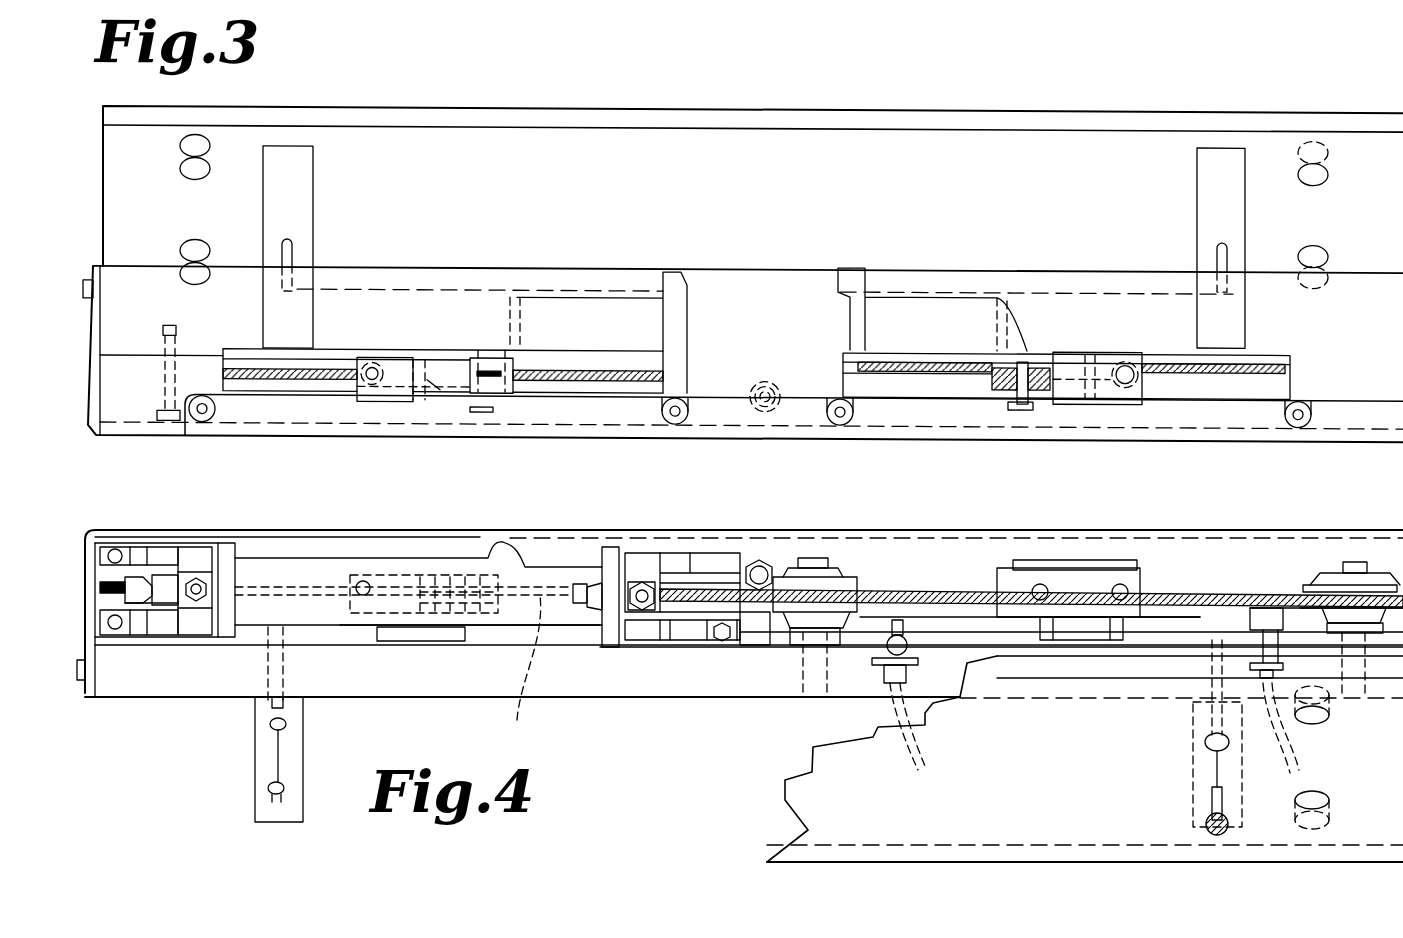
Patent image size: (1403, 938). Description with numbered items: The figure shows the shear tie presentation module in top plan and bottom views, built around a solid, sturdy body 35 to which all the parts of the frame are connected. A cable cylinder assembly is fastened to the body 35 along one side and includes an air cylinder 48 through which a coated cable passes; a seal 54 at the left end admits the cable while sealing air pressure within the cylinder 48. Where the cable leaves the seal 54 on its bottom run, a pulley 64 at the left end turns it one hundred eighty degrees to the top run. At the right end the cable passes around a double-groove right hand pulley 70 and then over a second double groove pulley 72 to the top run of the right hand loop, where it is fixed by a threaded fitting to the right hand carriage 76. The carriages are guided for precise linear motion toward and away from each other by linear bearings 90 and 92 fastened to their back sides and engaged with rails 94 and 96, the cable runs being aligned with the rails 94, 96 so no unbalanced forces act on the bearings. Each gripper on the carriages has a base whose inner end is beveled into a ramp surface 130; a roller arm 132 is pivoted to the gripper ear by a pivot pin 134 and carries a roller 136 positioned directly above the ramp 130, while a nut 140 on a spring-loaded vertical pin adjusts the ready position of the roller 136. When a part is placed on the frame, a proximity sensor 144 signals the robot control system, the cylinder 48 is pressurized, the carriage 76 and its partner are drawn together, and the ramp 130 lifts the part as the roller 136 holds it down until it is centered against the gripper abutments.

In FIG. 4, the body 35 is at (688, 680).
In FIG. 4, the air cylinder 48 is at (305, 570).
In FIG. 4, the seal 54 is at (170, 600).
In FIG. 4, the pulley 64 is at (118, 585).
In FIG. 4, the right hand pulley 70 is at (673, 613).
In FIG. 4, the second double groove pulley 72 is at (848, 585).
In FIG. 4, the right hand carriage 76 is at (1073, 582).
In FIG. 4, the linear bearing 90 is at (420, 641).
In FIG. 4, the linear bearing 92 is at (1085, 632).
In FIG. 4, the rail 94 is at (335, 627).
In FIG. 4, the rail 96 is at (1160, 627).
In FIG. 3, the ramp surface 130 is at (480, 351).
In FIG. 3, the roller arm 132 is at (388, 393).
In FIG. 3, the pivot pin 134 is at (420, 398).
In FIG. 3, the roller 136 is at (480, 363).
In FIG. 3, the nut 140 is at (350, 383).
In FIG. 3, the proximity sensor 144 is at (762, 408).
In FIG. 4, the proximity sensor 144 is at (530, 676).